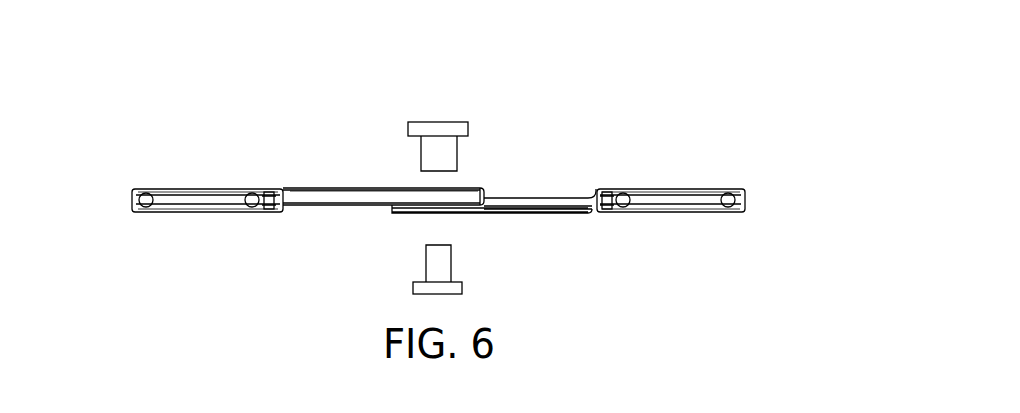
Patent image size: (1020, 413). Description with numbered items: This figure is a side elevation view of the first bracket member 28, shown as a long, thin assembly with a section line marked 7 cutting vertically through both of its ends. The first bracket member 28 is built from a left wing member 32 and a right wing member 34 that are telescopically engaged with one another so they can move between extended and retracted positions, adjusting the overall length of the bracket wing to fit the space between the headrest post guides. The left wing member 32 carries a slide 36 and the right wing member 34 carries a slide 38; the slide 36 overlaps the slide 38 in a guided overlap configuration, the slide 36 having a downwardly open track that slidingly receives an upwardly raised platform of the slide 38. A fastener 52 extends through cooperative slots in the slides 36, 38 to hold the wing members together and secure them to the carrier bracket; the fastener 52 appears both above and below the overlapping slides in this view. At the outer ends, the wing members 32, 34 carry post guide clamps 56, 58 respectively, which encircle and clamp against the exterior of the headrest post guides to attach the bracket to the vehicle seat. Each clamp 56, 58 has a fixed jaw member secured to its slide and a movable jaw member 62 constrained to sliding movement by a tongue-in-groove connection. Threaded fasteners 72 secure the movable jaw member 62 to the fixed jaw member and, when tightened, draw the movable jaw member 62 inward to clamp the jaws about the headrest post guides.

The first bracket member 28 is at (645, 100).
The left wing member 32 is at (306, 190).
The right wing member 34 is at (556, 190).
The slide 36 is at (377, 190).
The slide 38 is at (420, 215).
The fastener 52 is at (442, 120).
The post guide clamp 56 is at (202, 190).
The post guide clamp 58 is at (680, 190).
The movable jaw member 62 is at (205, 205).
The threaded fasteners 72 is at (143, 208).
The section line 7 is at (146, 200).